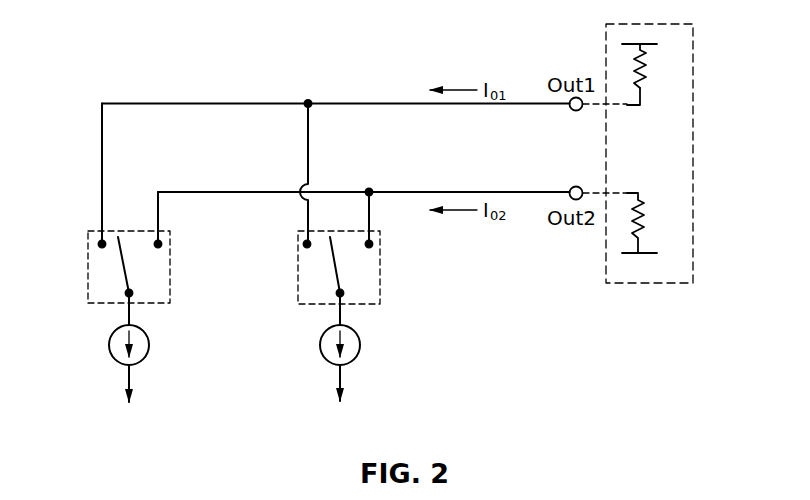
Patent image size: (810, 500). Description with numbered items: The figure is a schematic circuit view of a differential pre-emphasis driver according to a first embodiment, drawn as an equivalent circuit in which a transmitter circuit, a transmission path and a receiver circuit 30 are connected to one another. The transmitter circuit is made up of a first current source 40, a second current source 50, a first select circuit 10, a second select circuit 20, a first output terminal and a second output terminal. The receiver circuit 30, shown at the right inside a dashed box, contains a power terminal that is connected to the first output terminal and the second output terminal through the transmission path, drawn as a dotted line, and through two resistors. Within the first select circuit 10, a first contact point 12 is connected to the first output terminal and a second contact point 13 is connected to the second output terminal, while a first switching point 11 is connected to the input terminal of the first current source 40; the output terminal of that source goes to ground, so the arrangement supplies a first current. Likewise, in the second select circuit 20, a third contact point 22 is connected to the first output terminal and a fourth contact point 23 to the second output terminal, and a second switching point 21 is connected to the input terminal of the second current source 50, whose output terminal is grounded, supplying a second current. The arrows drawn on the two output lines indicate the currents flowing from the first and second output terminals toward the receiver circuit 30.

The first select circuit 10 is at (88, 270).
The first switching point 11 is at (125, 293).
The first contact point 12 is at (98, 244).
The second contact point 13 is at (162, 244).
The second select circuit 20 is at (380, 276).
The second switching point 21 is at (336, 293).
The third contact point 22 is at (303, 244).
The fourth contact point 23 is at (373, 244).
The receiver circuit 30 is at (693, 153).
The first current source 40 is at (149, 342).
The second current source 50 is at (360, 342).